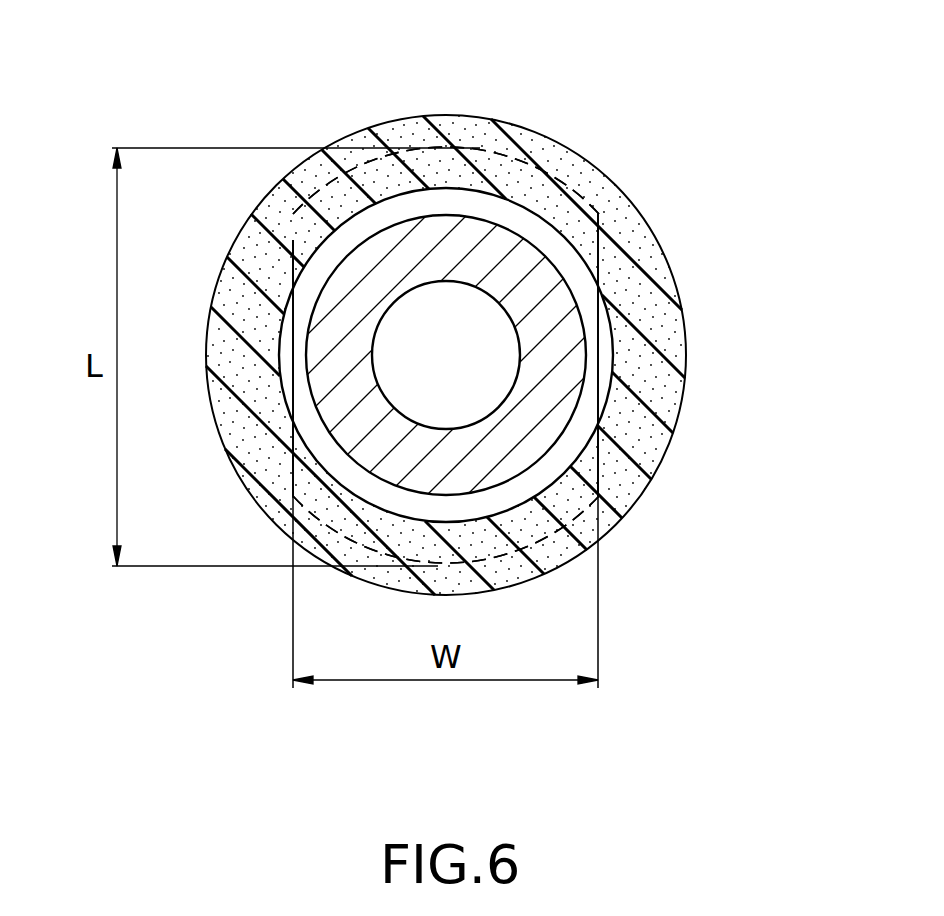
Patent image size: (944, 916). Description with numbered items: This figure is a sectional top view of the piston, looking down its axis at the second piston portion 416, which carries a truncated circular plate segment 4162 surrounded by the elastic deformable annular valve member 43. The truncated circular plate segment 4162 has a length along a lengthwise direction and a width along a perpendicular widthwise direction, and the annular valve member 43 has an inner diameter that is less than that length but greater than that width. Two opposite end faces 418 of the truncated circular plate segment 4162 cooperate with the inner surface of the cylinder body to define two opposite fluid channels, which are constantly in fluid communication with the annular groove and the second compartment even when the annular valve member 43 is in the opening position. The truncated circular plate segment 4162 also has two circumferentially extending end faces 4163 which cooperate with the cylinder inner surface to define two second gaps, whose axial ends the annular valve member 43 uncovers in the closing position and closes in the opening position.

The annular valve member 43 is at (652, 315).
The second piston portion 416 is at (522, 253).
The end faces 418 is at (300, 366).
The truncated circular plate segment 4162 is at (596, 417).
The circumferentially extending end faces 4163 is at (465, 148).